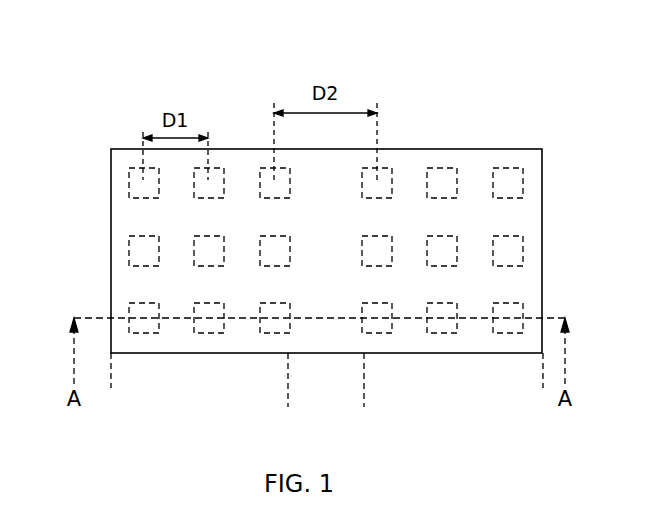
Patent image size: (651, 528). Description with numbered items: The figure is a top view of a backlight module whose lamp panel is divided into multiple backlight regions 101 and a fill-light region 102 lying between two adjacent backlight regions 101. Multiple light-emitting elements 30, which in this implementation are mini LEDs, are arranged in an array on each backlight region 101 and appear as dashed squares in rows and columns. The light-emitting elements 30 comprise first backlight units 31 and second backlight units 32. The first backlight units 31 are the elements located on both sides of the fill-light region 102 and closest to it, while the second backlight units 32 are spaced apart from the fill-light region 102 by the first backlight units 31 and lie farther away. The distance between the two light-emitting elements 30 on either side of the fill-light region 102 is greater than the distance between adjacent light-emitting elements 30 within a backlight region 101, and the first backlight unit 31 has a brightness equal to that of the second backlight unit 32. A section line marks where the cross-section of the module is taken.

The light-emitting element 30 is at (518, 93).
The first backlight unit 31 is at (388, 186).
The second backlight unit 32 is at (505, 185).
The backlight region 101 is at (184, 338).
The fill-light region 102 is at (331, 338).